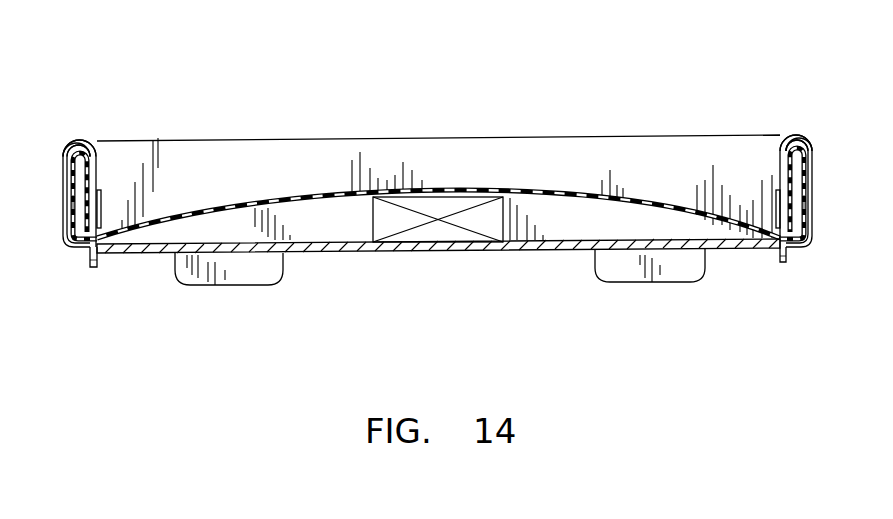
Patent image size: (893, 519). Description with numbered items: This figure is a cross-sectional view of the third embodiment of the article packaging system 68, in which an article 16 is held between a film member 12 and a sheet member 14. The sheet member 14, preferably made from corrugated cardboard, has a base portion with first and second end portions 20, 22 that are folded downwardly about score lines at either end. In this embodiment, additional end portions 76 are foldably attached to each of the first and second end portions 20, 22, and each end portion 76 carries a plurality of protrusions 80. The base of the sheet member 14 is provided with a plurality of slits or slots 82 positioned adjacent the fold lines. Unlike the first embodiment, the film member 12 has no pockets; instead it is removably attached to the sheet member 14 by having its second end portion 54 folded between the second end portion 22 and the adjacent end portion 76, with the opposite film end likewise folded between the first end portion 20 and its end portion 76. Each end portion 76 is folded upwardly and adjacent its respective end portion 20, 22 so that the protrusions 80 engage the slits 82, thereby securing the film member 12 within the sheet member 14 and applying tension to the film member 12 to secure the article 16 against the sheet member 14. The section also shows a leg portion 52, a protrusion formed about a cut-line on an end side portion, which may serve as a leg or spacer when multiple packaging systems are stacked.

The film member 12 is at (565, 190).
The sheet member 14 is at (303, 255).
The article 16 is at (445, 233).
The first end portion 20 is at (815, 163).
The second end portion 22 is at (62, 179).
The leg portion 52 is at (803, 194).
The second end portion of the film member 54 is at (73, 200).
The article packaging system 68 is at (238, 90).
The end portion 76 is at (97, 168).
The protrusion 80 is at (93, 268).
The slit 82 is at (80, 263).